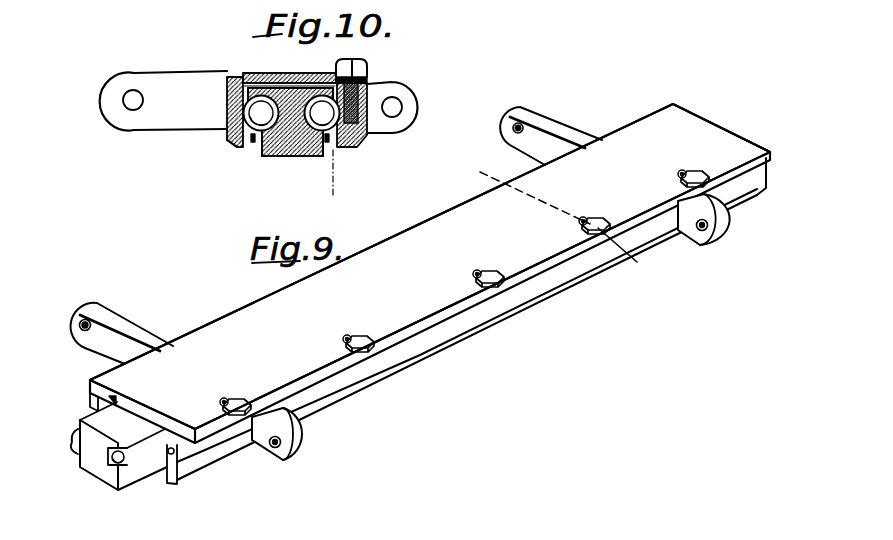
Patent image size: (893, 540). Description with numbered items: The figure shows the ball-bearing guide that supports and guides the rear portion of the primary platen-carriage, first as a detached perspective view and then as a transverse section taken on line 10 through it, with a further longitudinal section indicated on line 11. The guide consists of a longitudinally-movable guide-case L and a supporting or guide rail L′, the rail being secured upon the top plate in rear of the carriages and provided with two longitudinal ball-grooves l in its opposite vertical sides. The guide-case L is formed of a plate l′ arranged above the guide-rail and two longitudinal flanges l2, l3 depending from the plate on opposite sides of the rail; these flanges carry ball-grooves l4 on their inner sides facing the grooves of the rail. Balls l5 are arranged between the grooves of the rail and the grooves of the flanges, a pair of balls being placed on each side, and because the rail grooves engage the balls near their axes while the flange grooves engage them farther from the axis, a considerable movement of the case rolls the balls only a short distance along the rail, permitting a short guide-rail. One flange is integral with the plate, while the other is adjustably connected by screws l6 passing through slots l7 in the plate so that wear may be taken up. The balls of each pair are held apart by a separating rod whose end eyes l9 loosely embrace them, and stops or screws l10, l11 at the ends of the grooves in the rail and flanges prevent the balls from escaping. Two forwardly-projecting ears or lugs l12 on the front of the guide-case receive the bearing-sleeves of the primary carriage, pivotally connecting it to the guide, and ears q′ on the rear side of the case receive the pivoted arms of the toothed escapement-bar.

In FIG. 9, the guide-case L is at (90, 383).
In FIG. 10, the guide-case L is at (247, 66).
In FIG. 9, the guide-rail L′ is at (98, 504).
In FIG. 10, the guide-rail L′ is at (303, 182).
In FIG. 9, the ball-grooves of the guide-rail l is at (78, 432).
In FIG. 10, the ball-grooves of the guide-rail l is at (268, 158).
In FIG. 9, the plate of the guide-case l′ is at (503, 233).
In FIG. 10, the plate of the guide-case l′ is at (282, 74).
In FIG. 9, the longitudinal flange l2 is at (392, 366).
In FIG. 10, the longitudinal flange l2 is at (358, 144).
In FIG. 9, the longitudinal flange l3 is at (88, 398).
In FIG. 10, the longitudinal flange l3 is at (234, 108).
In FIG. 9, the ball-grooves of the flanges l4 is at (180, 462).
In FIG. 10, the ball-grooves of the flanges l4 is at (238, 117).
In FIG. 10, the balls l5 is at (250, 108).
In FIG. 9, the screws l6 is at (362, 336).
In FIG. 10, the screws l6 is at (356, 62).
In FIG. 9, the slots l7 is at (344, 339).
In FIG. 10, the slots l7 is at (368, 80).
In FIG. 10, the eyes l9 is at (251, 141).
In FIG. 9, the stop or screw l10 is at (110, 462).
In FIG. 9, the stop or screw l11 is at (175, 445).
In FIG. 9, the ears or lugs l12 is at (124, 318).
In FIG. 10, the ears or lugs l12 is at (163, 88).
In FIG. 9, the ears q′ is at (497, 328).
In FIG. 10, the ears q′ is at (408, 97).
In FIG. 9, the section line 10 10 is at (490, 176).
In FIG. 10, the section line 11 11 is at (336, 72).